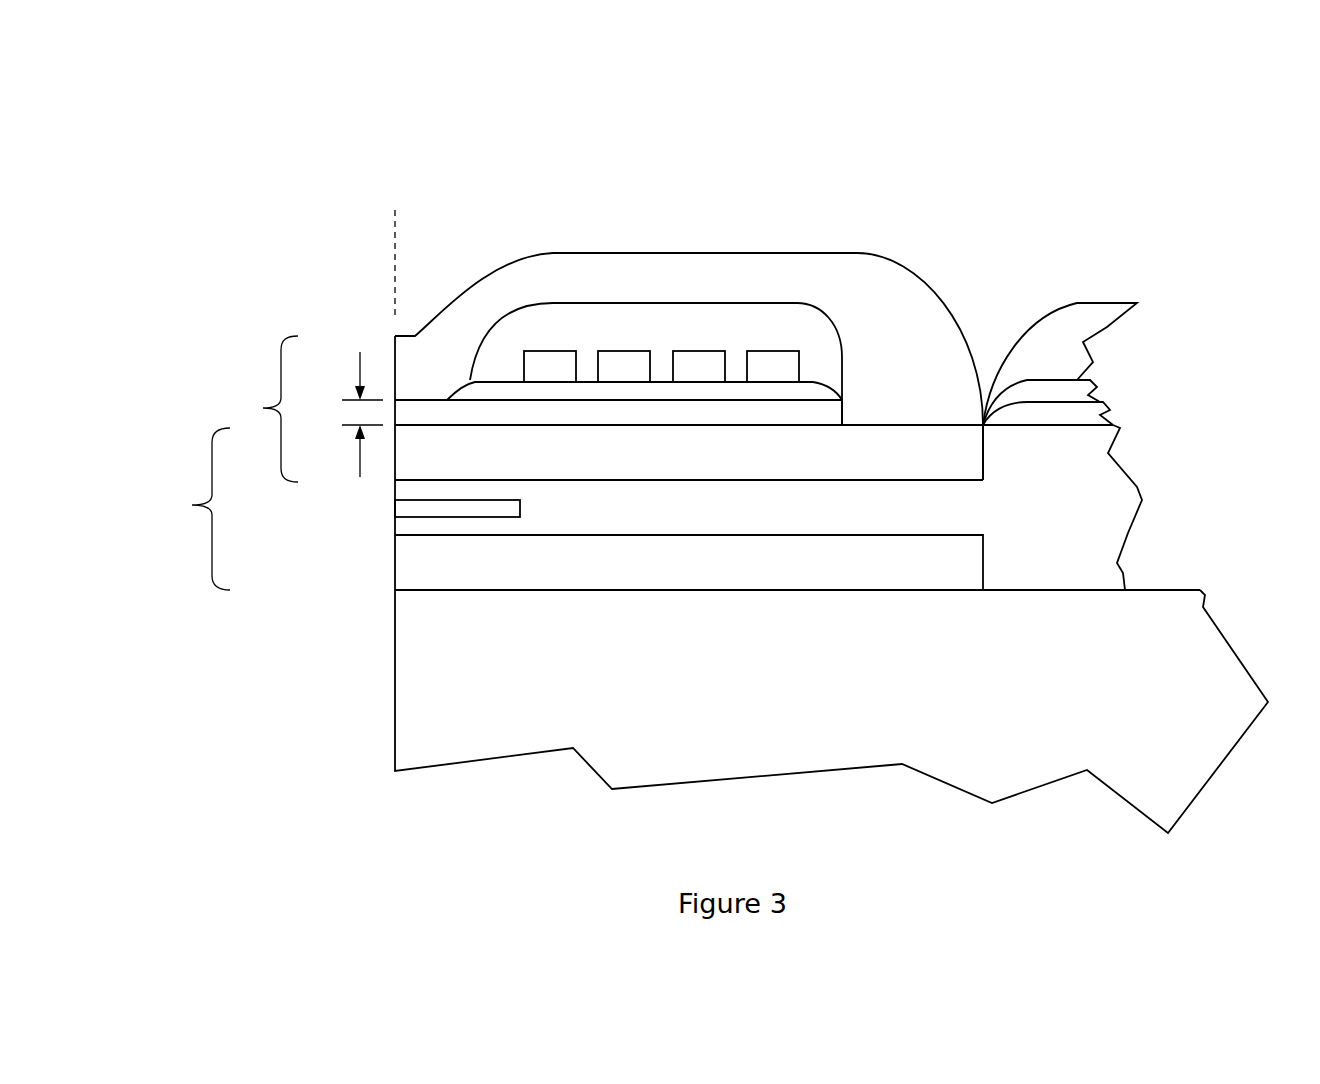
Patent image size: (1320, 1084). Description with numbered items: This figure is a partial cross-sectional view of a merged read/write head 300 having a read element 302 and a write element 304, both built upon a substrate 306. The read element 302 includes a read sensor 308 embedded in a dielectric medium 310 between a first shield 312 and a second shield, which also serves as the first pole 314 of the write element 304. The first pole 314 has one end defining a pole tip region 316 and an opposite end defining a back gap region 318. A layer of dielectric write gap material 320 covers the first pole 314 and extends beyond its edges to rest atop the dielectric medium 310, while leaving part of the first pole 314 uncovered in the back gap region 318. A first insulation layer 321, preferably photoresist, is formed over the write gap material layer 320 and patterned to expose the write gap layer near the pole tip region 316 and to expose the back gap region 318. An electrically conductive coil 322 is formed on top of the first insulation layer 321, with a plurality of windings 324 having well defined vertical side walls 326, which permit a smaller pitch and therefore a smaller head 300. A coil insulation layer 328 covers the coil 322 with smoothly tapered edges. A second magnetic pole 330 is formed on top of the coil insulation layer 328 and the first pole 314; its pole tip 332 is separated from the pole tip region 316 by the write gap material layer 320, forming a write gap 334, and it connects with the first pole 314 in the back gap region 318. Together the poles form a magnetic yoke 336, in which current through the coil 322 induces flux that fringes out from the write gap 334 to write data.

The merged read/write head 300 is at (1027, 152).
The read element 302 is at (192, 505).
The write element 304 is at (263, 408).
The substrate 306 is at (482, 729).
The read sensor 308 is at (510, 508).
The dielectric medium 310 is at (765, 508).
The first shield 312 is at (738, 570).
The first pole 314 is at (565, 462).
The pole tip region 316 is at (413, 455).
The back gap region 318 is at (933, 455).
The write gap material layer 320 is at (673, 418).
The first insulation layer 321 is at (813, 393).
The electrically conductive coil 322 is at (693, 348).
The windings 324 is at (620, 365).
The vertical side walls 326 is at (580, 362).
The coil insulation layer 328 is at (805, 333).
The second magnetic pole 330 is at (623, 278).
The pole tip 332 is at (427, 341).
The write gap 334 is at (357, 357).
The magnetic yoke 336 is at (785, 253).